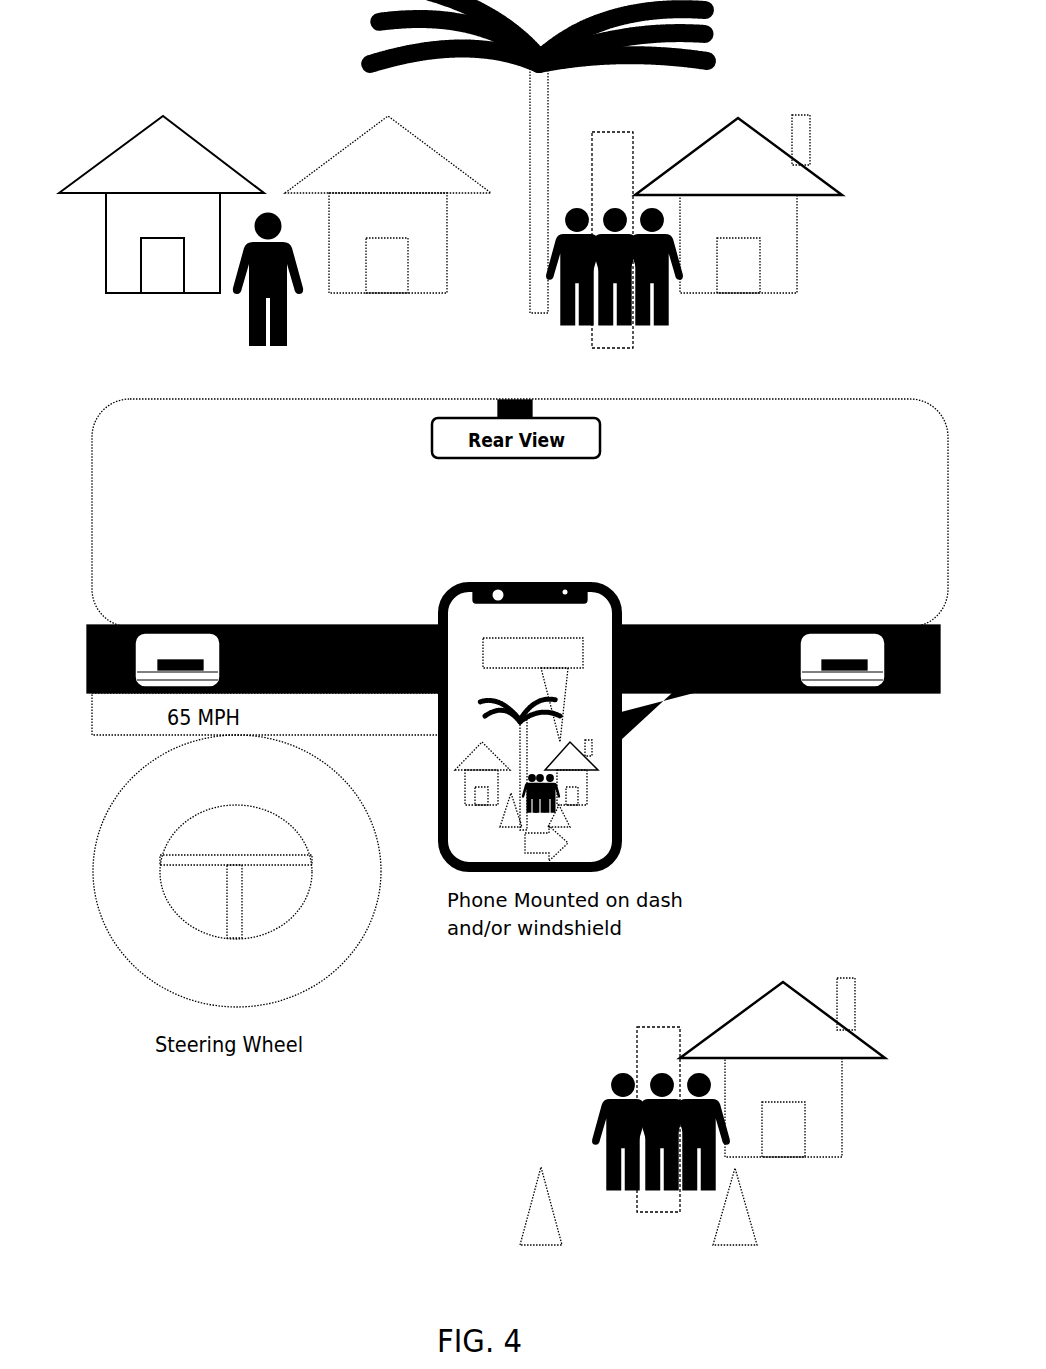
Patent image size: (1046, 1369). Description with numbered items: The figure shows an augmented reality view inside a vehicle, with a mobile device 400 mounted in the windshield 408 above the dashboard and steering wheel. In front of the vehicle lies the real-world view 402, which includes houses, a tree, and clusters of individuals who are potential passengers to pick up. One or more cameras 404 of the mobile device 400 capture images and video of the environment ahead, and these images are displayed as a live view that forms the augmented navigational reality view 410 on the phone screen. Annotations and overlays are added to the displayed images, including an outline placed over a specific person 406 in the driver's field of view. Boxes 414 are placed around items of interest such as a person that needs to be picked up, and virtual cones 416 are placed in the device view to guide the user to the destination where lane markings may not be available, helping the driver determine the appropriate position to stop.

The mobile device 400 is at (602, 604).
The real-world view 402 is at (545, 125).
The cameras 404 is at (498, 586).
The outline over specific person 406 is at (622, 143).
The windshield 408 is at (277, 406).
The augmented navigational reality view 410 is at (592, 838).
The boxes 414 is at (655, 1028).
The virtual cones 416 is at (740, 1217).